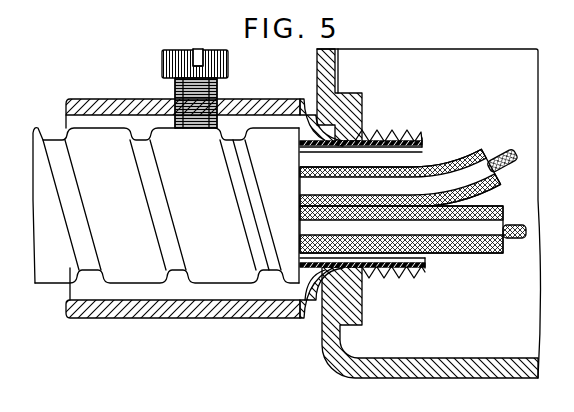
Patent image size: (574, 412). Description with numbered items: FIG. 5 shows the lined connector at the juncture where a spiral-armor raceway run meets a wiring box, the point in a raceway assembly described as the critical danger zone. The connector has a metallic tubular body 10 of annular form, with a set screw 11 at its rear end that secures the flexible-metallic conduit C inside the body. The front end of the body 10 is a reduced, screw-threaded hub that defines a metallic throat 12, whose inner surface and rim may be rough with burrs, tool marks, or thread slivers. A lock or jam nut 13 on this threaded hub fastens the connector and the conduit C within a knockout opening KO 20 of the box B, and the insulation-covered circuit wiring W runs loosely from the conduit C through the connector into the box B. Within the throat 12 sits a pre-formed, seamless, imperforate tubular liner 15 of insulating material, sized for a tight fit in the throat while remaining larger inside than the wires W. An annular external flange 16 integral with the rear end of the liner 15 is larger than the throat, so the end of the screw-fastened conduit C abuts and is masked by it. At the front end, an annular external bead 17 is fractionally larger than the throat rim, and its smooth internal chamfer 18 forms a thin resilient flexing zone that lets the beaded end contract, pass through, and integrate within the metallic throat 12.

The tubular body 10 is at (196, 308).
The set screw 11 is at (168, 87).
The metallic throat 12 is at (386, 135).
The lock nut 13 is at (348, 97).
The tubular liner 15 is at (382, 278).
The annular external flange 16 is at (297, 297).
The annular external bead 17 is at (418, 270).
The internal chamfer 18 is at (427, 260).
The lower clamp member 20 is at (330, 285).
The box B is at (453, 57).
The flexible-metallic conduit C is at (53, 270).
The circuit wiring W is at (497, 198).